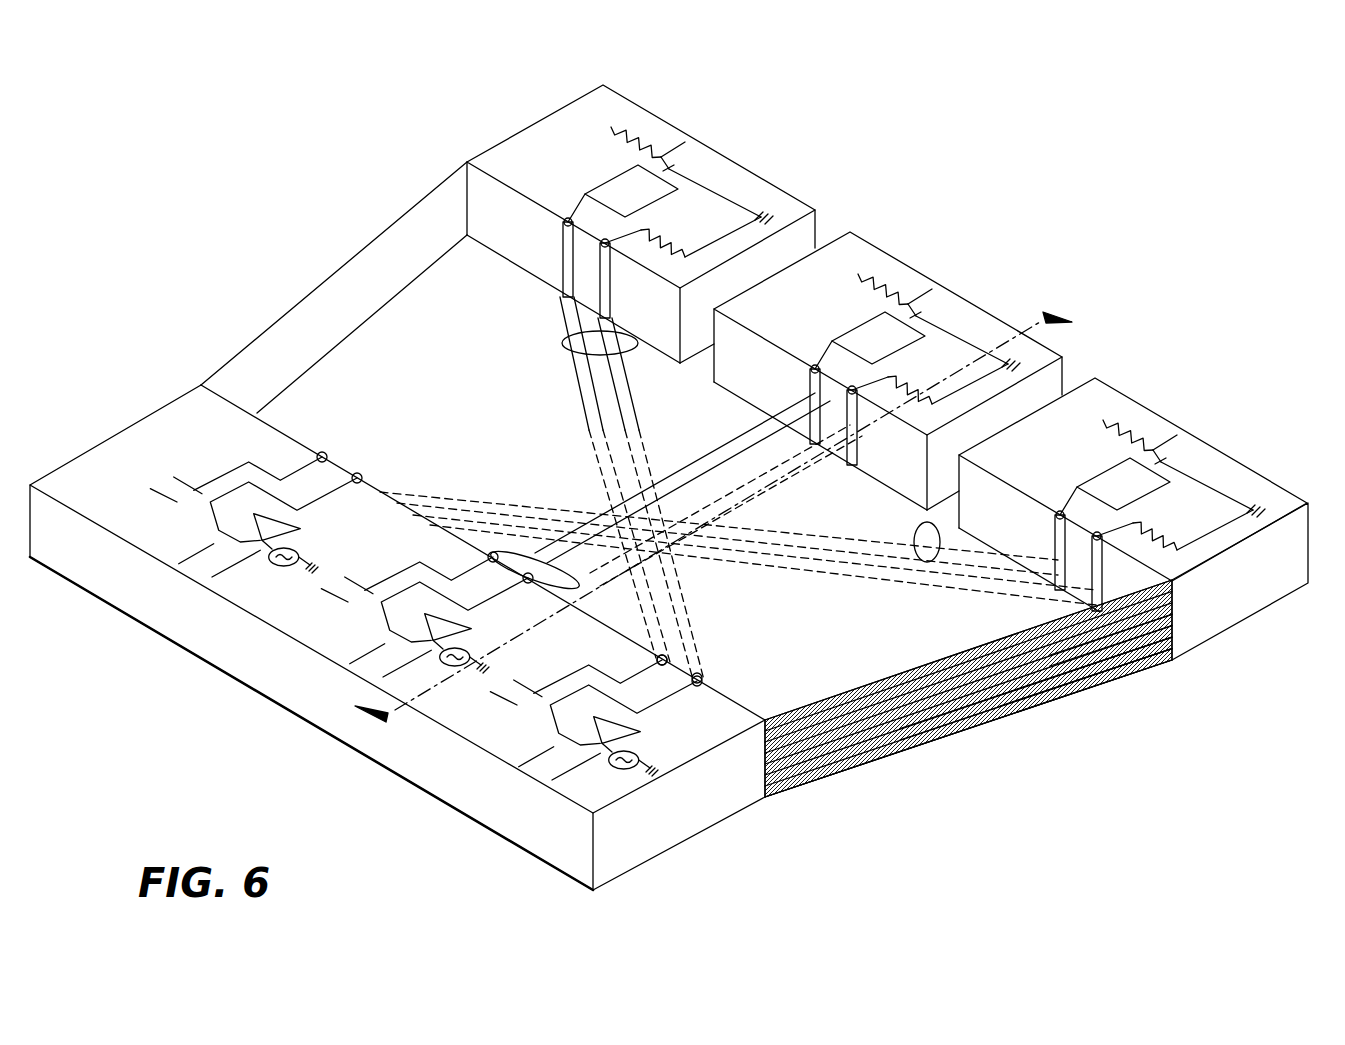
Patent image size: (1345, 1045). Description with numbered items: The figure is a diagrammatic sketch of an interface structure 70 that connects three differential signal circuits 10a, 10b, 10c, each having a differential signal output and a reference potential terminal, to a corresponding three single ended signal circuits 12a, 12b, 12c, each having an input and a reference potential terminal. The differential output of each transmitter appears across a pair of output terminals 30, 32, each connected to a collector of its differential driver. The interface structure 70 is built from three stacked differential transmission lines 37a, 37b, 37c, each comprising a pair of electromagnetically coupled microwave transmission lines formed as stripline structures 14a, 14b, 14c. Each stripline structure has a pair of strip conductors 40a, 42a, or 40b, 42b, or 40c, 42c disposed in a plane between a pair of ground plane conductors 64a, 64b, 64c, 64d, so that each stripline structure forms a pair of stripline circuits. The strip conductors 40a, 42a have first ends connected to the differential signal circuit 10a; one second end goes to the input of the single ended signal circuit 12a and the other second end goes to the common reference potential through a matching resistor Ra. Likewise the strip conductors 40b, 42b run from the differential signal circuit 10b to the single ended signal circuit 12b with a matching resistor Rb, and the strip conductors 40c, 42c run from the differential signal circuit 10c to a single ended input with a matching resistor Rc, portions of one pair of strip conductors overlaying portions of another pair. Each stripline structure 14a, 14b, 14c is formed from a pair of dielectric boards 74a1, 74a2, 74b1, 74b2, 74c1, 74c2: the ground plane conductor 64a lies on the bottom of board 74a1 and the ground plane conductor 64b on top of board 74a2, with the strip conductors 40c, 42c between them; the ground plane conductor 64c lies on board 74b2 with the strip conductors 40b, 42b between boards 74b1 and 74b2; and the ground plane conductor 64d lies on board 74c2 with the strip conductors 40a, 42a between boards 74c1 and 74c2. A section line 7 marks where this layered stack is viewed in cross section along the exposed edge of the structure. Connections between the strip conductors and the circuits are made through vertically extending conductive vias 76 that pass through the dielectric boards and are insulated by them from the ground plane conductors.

The interface structure 70 is at (328, 352).
The single ended signal circuit 12a is at (1137, 404).
The single ended signal circuit 12b is at (893, 258).
The single ended signal circuit 12c is at (646, 112).
The conductive via 76 is at (562, 236).
The differential signal circuit 10a is at (201, 481).
The differential signal circuit 10b is at (372, 581).
The differential signal circuit 10c is at (543, 688).
The output terminal 30 is at (666, 655).
The output terminal 32 is at (698, 673).
The strip conductor 40a is at (885, 548).
The strip conductor 40b is at (740, 432).
The strip conductor 40c is at (580, 388).
The strip conductor 42a is at (777, 525).
The strip conductor 42b is at (728, 458).
The strip conductor 42c is at (618, 412).
The stacked differential transmission line 37a is at (928, 563).
The stacked differential transmission line 37b is at (537, 568).
The stacked differential transmission line 37c is at (565, 345).
The section line 7- 7 is at (702, 504).
The ground plane conductor 64a is at (933, 743).
The ground plane conductor 64b is at (920, 697).
The ground plane conductor 64c is at (857, 703).
The ground plane conductor 64d is at (815, 705).
The dielectric board 74a1 is at (1140, 673).
The dielectric board 74a2 is at (1155, 670).
The dielectric board 74b1 is at (967, 723).
The dielectric board 74b2 is at (1000, 717).
The dielectric board 74c1 is at (795, 777).
The dielectric board 74c2 is at (820, 767).
The stripline structure 14a is at (1105, 677).
The stripline structure 14b is at (1065, 693).
The stripline structure 14c is at (877, 760).